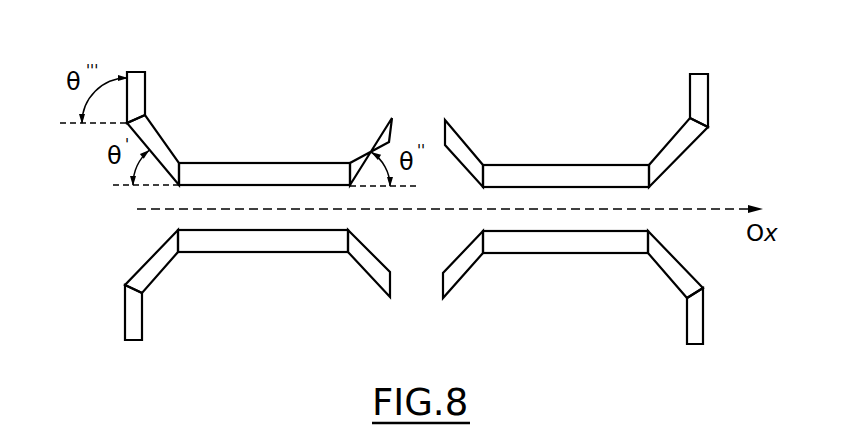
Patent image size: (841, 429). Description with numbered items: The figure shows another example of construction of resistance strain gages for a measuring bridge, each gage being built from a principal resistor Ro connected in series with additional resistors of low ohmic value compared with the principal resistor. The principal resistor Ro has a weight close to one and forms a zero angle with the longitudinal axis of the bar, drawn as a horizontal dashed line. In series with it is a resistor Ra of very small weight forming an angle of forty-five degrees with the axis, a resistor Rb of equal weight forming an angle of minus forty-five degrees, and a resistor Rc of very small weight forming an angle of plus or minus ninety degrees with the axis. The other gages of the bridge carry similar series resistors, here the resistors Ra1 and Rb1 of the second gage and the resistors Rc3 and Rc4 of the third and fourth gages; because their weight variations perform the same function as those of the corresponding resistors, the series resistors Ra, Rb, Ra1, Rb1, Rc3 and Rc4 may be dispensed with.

The resistor Rc is at (137, 93).
The resistor Ra is at (163, 147).
The principal resistor Ro is at (273, 179).
The resistor Rb is at (370, 147).
The series resistor Ra1 is at (463, 148).
The series resistor Rb1 is at (680, 142).
The series resistor Rc3 is at (128, 318).
The series resistor Rc4 is at (697, 317).